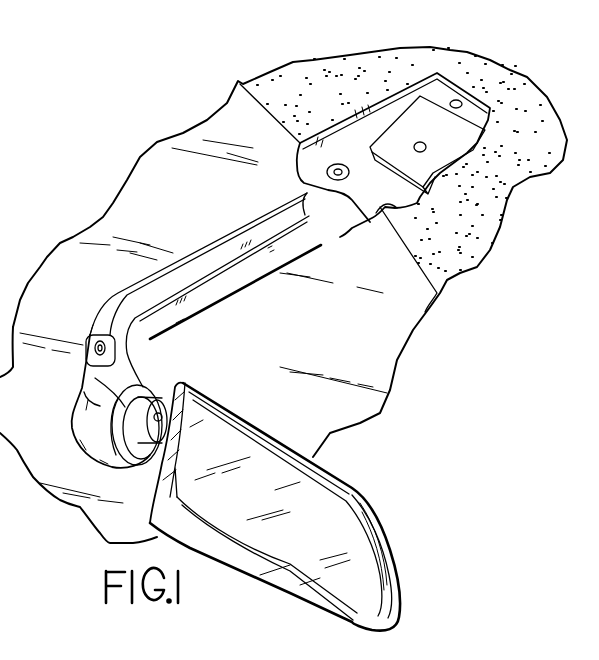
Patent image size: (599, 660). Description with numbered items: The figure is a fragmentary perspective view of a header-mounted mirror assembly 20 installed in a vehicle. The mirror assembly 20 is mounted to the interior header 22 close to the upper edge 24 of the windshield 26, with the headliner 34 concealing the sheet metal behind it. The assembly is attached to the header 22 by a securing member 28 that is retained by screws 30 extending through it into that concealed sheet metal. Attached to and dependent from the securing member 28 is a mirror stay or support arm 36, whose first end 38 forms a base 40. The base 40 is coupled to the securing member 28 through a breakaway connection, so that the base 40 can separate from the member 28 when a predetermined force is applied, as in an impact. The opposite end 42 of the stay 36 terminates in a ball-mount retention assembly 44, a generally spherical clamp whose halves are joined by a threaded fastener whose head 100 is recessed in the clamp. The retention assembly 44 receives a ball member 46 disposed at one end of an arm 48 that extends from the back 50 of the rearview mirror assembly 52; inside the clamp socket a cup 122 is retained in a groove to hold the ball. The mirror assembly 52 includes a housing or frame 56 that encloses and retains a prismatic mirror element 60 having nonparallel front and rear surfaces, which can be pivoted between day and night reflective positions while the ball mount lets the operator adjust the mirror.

The mirror assembly 20 is at (262, 332).
The interior header 22 is at (300, 72).
The upper edge 24 is at (412, 258).
The windshield 26 is at (205, 204).
The securing member 28 is at (477, 102).
The screws 30 is at (465, 110).
The headliner 34 is at (395, 107).
The mirror stay or support arm 36 is at (265, 264).
The first end 38 is at (481, 172).
The base 40 is at (413, 198).
The opposite end 42 is at (92, 296).
The ball-mount retention assembly 44 is at (60, 381).
The ball member 46 is at (153, 385).
The arm 48 is at (167, 402).
The back 50 is at (152, 477).
The mirror assembly 52 is at (382, 505).
The rearview mirror housing or frame 56 is at (396, 582).
The prismatic mirror element 60 is at (360, 590).
The head 100 is at (94, 349).
The cup 122 is at (108, 434).